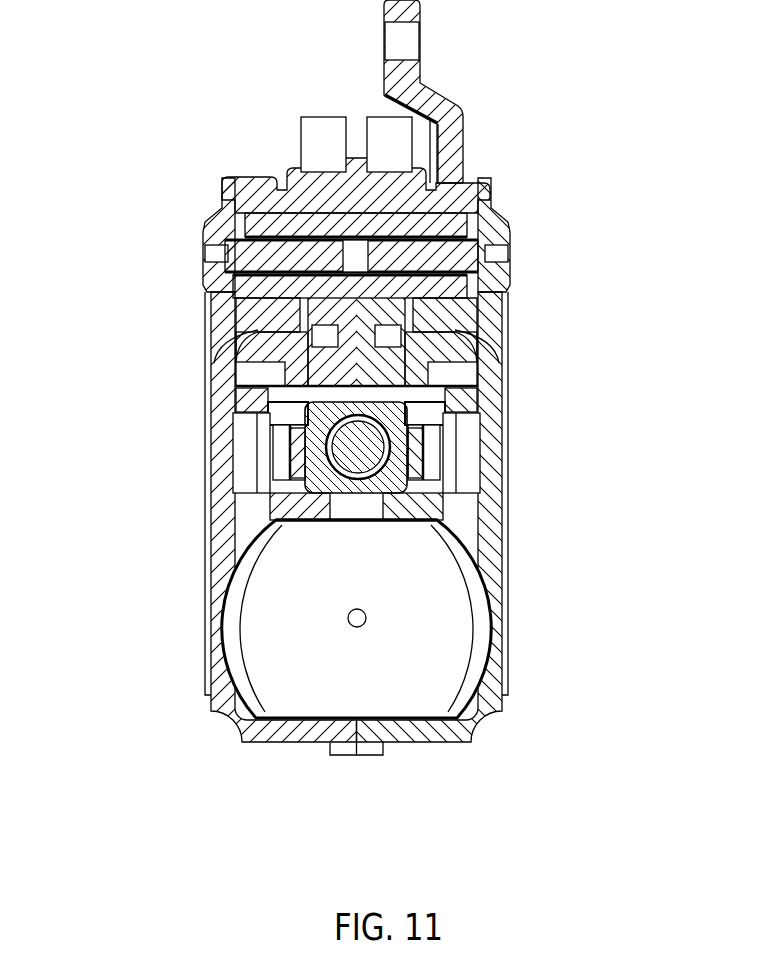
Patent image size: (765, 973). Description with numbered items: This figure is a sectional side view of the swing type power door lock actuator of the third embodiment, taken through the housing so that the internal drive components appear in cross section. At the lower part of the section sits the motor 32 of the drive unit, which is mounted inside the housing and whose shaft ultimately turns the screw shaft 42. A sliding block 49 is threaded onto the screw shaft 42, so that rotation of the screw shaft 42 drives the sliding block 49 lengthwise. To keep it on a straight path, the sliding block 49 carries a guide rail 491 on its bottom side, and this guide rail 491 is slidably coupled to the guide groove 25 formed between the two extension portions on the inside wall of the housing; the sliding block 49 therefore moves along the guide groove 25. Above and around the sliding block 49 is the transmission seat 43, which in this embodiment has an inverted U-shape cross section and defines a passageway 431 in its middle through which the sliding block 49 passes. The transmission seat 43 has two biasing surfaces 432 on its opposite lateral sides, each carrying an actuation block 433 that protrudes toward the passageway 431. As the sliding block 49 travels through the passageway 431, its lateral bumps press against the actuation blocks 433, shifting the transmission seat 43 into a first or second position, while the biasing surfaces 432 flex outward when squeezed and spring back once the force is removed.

The transmission seat 43 is at (290, 370).
The passageway 431 is at (367, 402).
The sliding block 49 is at (470, 362).
The biasing surfaces 432 is at (277, 430).
The actuation block 433 is at (293, 465).
The screw shaft 42 is at (397, 447).
The guide rail 491 is at (353, 507).
The guide groove 25 is at (237, 572).
The motor 32 is at (433, 622).